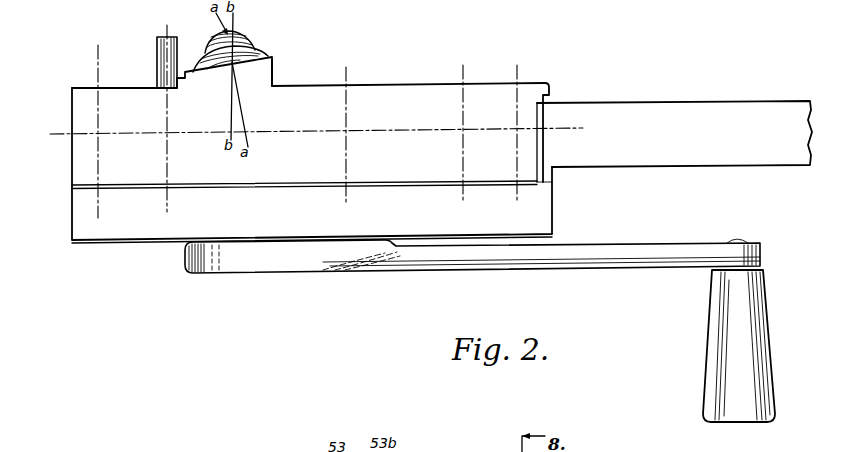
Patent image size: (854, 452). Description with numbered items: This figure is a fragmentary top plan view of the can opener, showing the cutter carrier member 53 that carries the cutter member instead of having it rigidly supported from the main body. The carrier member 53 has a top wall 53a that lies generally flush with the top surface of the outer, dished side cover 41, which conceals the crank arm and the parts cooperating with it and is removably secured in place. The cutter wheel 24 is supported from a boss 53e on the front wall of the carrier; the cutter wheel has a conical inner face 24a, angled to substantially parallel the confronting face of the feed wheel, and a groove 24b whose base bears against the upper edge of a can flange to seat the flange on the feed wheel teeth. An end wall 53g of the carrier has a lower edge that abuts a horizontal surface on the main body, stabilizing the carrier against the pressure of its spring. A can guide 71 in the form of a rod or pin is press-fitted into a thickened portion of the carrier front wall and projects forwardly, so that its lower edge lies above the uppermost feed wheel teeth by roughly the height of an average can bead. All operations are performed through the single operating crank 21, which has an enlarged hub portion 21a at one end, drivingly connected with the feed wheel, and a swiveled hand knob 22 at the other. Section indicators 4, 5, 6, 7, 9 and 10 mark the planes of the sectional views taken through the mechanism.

The cutter carrier member 53 is at (359, 78).
The top wall 53a is at (391, 100).
The boss 53e is at (290, 72).
The end wall 53g is at (72, 157).
The can guide 71 is at (164, 62).
The cutter wheel 24 is at (256, 48).
The conical inner face 24a is at (256, 56).
The groove 24b is at (230, 62).
The side cover 41 is at (560, 224).
The operating crank 21 is at (420, 262).
The hub portion 21a is at (238, 267).
The hand knob 22 is at (718, 308).
The section line 4- 4 is at (50, 134).
The section line 5- 5 is at (490, 65).
The section line 6- 6 is at (438, 65).
The section line 7- 7 is at (346, 67).
The section line 9- 9 is at (142, 25).
The section line 10- 10 is at (98, 45).